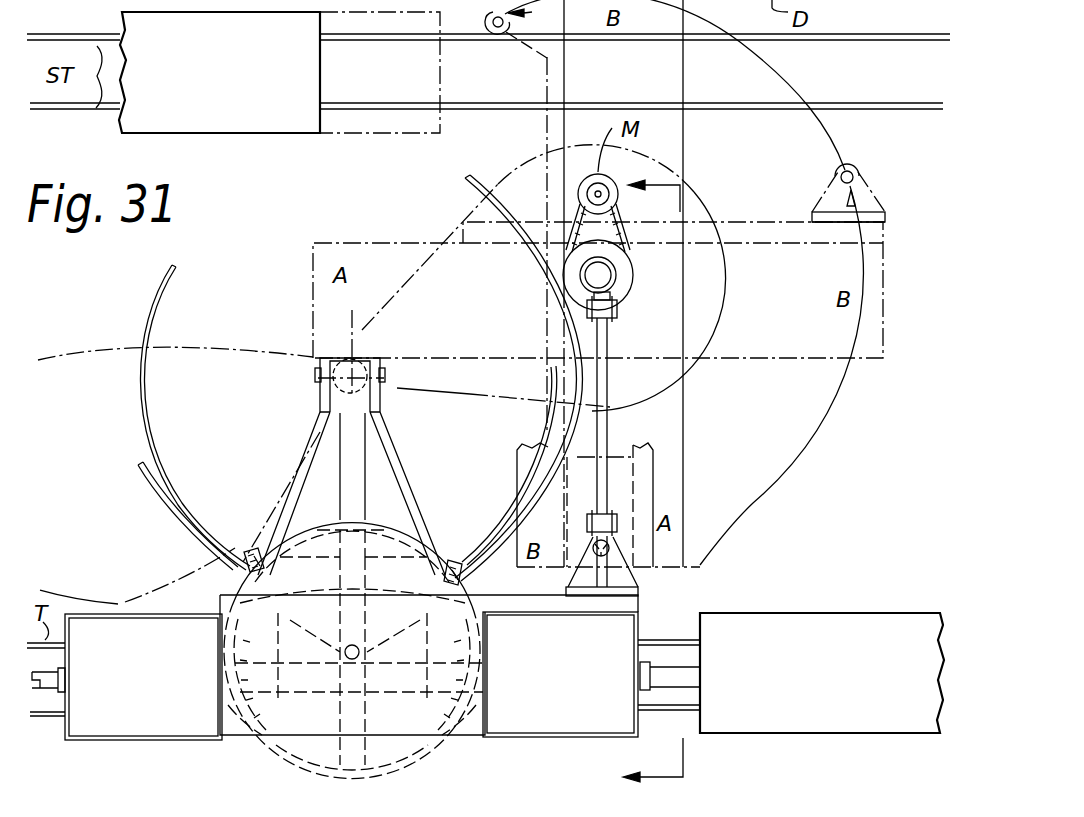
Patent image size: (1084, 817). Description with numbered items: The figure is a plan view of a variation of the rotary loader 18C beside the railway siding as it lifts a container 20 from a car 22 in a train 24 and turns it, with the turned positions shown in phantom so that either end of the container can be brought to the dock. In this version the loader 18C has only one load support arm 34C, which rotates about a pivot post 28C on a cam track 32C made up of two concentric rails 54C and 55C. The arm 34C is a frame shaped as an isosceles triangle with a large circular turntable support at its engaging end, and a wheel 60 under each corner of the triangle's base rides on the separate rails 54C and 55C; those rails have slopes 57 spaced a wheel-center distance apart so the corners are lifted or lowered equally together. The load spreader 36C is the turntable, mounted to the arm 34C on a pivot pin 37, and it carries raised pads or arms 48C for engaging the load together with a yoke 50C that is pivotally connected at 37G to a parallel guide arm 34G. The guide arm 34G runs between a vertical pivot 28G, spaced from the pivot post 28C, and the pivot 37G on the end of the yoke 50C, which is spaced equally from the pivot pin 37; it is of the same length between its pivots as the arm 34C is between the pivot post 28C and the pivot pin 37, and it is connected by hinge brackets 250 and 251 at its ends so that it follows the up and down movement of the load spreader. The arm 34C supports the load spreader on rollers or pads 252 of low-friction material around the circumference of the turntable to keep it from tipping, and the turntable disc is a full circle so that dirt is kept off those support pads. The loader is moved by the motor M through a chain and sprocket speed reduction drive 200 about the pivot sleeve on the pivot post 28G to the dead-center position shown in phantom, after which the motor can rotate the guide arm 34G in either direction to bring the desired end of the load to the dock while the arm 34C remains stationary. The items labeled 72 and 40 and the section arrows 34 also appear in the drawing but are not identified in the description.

The carriage 72 is at (239, 133).
The chain and sprocket speed reduction drive 200 is at (702, 203).
The section line 34 is at (653, 481).
The vertical pivot 28G is at (612, 277).
The hinge bracket 250 is at (614, 291).
The parallel guide arm 34G is at (603, 437).
The hinge bracket 251 is at (612, 548).
The pivot 37G is at (615, 558).
The container 20 is at (123, 723).
The yoke 50C is at (513, 607).
The train 24 is at (810, 723).
The pivot pin 37 is at (352, 660).
The raised pads or arms 48C is at (268, 740).
The load spreader 36C is at (410, 748).
The rollers or pads 252 is at (228, 747).
The bearing block 40 is at (337, 360).
The pivot post 28C is at (351, 341).
The loader 18C is at (300, 470).
The load support arm 34C is at (398, 450).
The cam track 32C is at (180, 540).
The rail 54C is at (163, 503).
The rail 55C is at (505, 507).
The slopes 57 is at (248, 555).
The wheel 60 is at (235, 577).
The car 22 is at (118, 610).